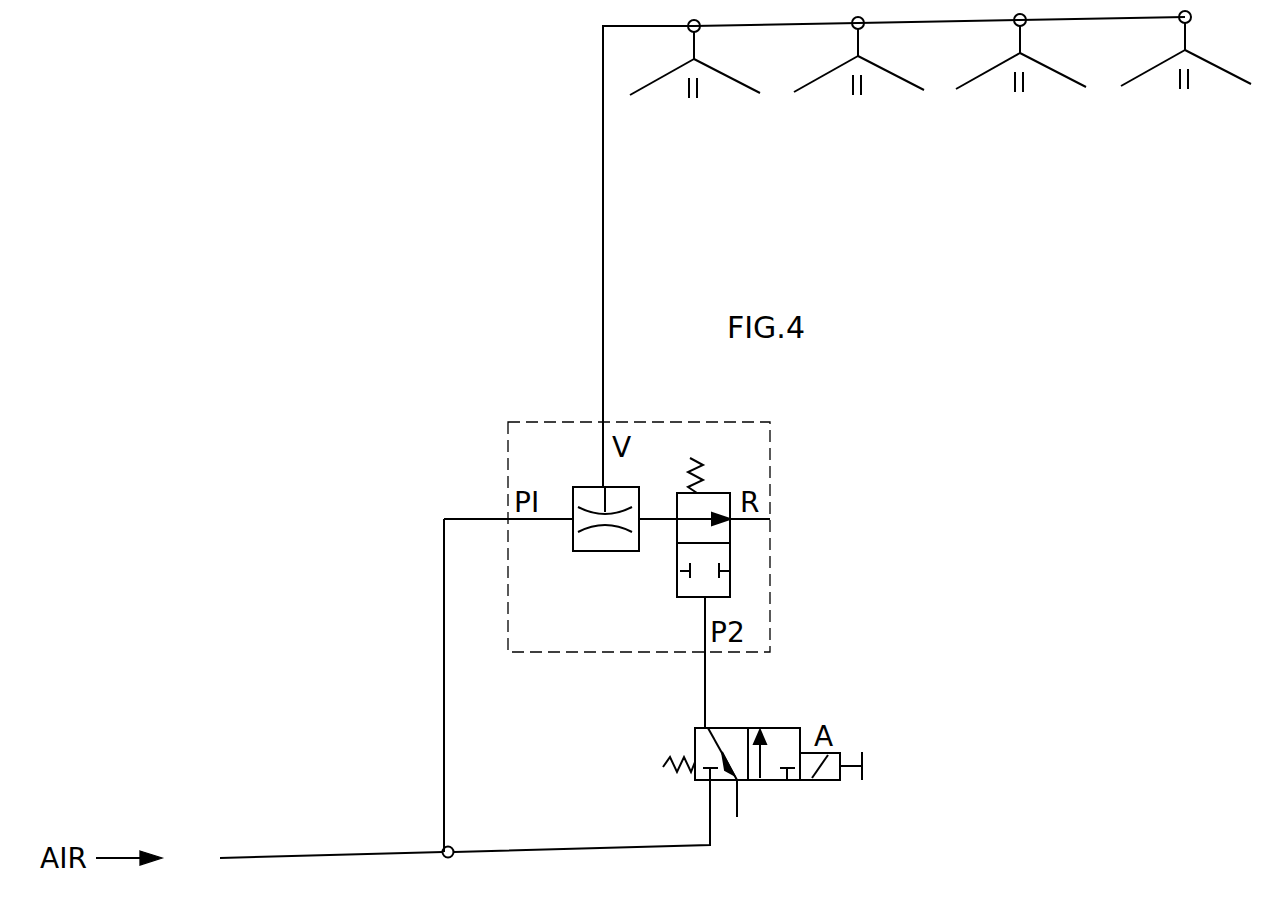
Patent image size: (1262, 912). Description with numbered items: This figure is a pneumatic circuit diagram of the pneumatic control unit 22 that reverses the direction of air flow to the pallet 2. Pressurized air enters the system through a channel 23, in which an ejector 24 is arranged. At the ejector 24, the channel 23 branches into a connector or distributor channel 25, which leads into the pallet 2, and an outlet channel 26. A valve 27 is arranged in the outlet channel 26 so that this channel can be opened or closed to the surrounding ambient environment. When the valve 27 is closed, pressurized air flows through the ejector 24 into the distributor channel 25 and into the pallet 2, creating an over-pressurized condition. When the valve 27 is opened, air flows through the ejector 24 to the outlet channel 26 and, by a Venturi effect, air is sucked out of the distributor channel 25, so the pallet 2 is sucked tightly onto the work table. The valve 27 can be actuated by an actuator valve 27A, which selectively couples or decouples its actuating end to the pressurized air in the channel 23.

The pallet 2 is at (940, 54).
The pneumatic control unit 22 is at (639, 579).
The channel 23 is at (444, 686).
The ejector 24 is at (590, 494).
The distributor channel 25 is at (603, 271).
The outlet channel 26 is at (659, 510).
The valve 27 is at (726, 557).
The actuator valve 27A is at (737, 725).